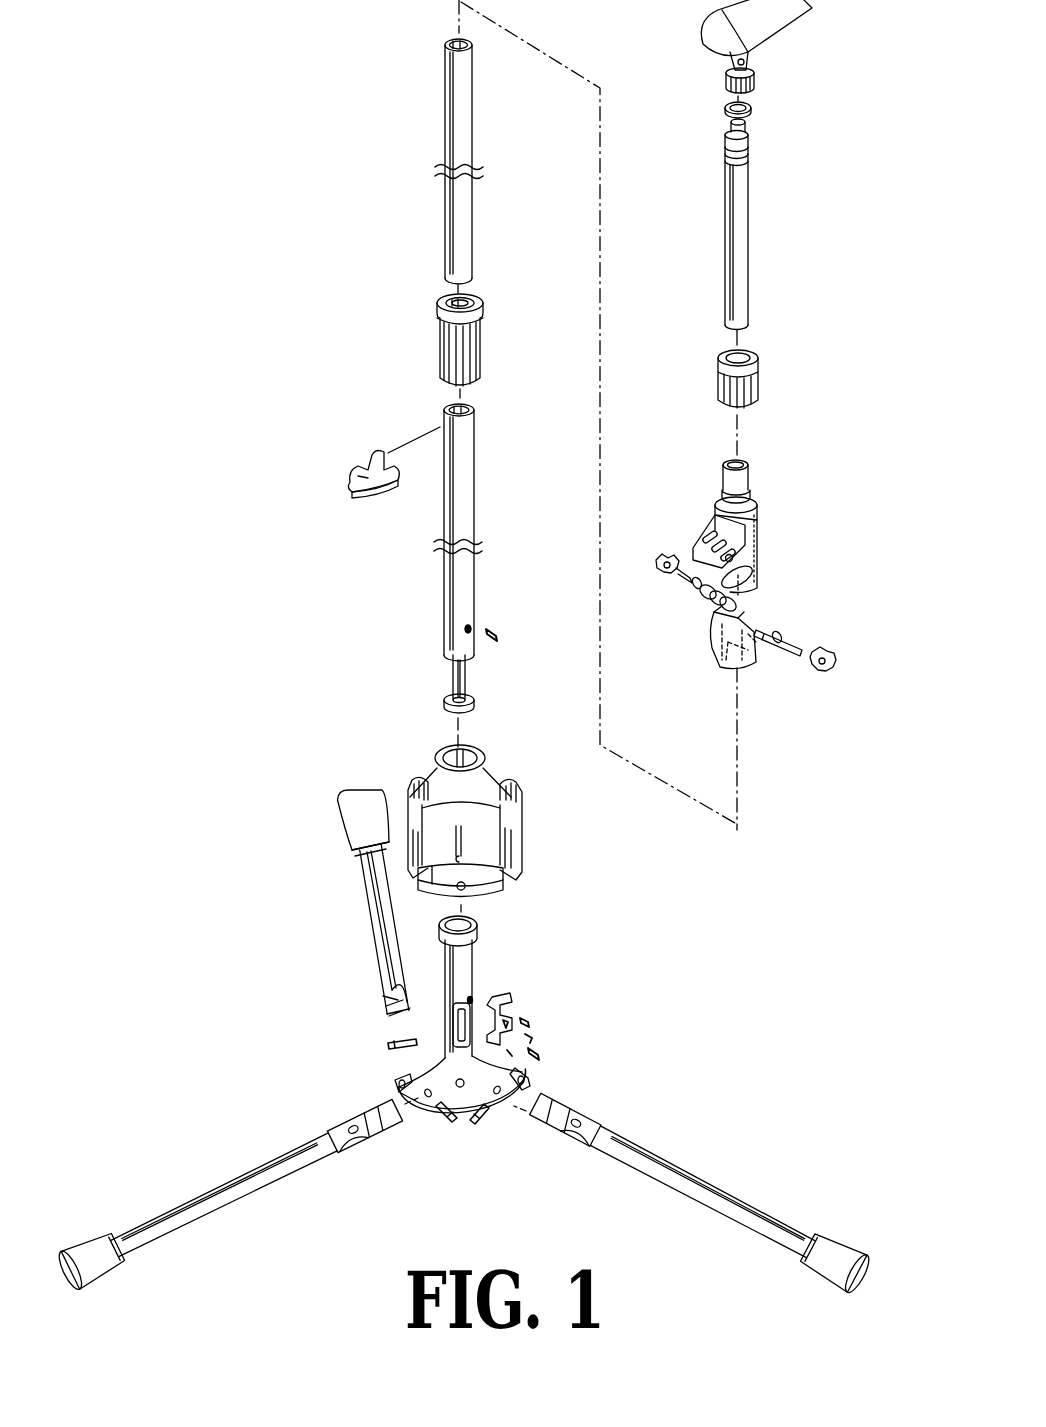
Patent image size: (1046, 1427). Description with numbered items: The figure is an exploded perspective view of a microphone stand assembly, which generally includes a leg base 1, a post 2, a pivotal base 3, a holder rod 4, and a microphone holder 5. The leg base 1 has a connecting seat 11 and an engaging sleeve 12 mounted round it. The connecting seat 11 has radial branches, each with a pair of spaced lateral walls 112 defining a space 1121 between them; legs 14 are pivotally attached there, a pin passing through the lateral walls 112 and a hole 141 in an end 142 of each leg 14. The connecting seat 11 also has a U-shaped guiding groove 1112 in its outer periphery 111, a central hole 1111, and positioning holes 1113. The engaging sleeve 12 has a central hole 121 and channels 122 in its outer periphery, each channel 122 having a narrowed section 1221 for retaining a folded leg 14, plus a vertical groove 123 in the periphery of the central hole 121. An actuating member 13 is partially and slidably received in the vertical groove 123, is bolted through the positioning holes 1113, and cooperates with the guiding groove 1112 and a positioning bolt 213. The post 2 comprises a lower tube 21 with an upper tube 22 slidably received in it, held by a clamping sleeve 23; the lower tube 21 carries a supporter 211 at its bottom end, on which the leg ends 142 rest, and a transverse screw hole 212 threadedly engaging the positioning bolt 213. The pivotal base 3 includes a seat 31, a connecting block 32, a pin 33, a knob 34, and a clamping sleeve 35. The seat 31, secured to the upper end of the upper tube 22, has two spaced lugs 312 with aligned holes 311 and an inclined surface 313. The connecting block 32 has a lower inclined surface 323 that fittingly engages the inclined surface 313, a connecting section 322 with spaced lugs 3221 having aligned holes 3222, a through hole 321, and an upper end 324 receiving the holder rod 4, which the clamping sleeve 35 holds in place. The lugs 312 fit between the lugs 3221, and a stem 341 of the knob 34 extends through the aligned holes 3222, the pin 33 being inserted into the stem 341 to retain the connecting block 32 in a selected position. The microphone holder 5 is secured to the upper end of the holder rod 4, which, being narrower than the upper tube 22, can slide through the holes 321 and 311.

The leg base 1 is at (464, 997).
The connecting seat 11 is at (448, 996).
The outer periphery 111 is at (470, 964).
The central hole 1111 is at (478, 923).
The guiding groove 1112 is at (458, 1029).
The positioning holes 1113 is at (470, 1000).
The lateral walls 112 is at (531, 1085).
The space 1121 is at (527, 1092).
The engaging sleeve 12 is at (473, 805).
The central hole 121 is at (450, 756).
The channels 122 is at (503, 803).
The narrowed section 1221 is at (514, 824).
The vertical groove 123 is at (472, 757).
The actuating member 13 is at (512, 999).
The legs 14 is at (464, 1194).
The hole 141 is at (574, 1138).
The end 142 is at (548, 1118).
The post 2 is at (462, 394).
The lower tube 21 is at (462, 577).
The supporter 211 is at (463, 680).
The transverse screw hole 212 is at (470, 628).
The positioning bolt 213 is at (503, 637).
The upper tube 22 is at (440, 150).
The clamping sleeve 23 is at (435, 342).
The pivotal base 3 is at (748, 585).
The seat 31 is at (740, 675).
The aligned holes 311 is at (738, 664).
The lugs 312 is at (716, 632).
The inclined surface 313 is at (749, 636).
The connecting block 32 is at (741, 500).
The through hole 321 is at (740, 590).
The connecting section 322 is at (696, 518).
The lugs 3221 is at (707, 520).
The aligned holes 3222 is at (737, 556).
The lower inclined surface 323 is at (756, 590).
The upper end 324 is at (745, 478).
The pin 33 is at (680, 585).
The knob 34 is at (820, 664).
The stem 341 is at (808, 650).
The clamping sleeve 35 is at (758, 388).
The holder rod 4 is at (745, 216).
The microphone holder 5 is at (770, 22).